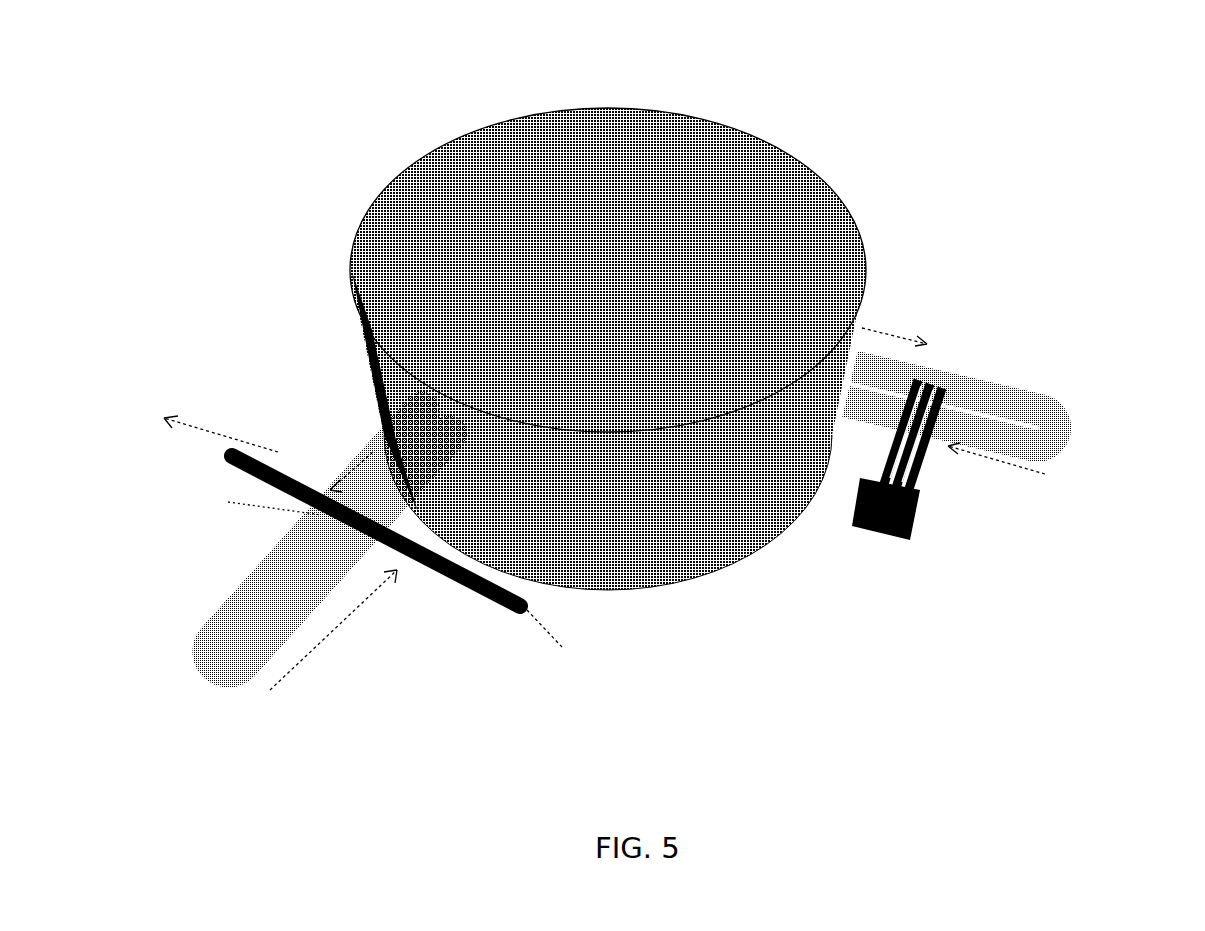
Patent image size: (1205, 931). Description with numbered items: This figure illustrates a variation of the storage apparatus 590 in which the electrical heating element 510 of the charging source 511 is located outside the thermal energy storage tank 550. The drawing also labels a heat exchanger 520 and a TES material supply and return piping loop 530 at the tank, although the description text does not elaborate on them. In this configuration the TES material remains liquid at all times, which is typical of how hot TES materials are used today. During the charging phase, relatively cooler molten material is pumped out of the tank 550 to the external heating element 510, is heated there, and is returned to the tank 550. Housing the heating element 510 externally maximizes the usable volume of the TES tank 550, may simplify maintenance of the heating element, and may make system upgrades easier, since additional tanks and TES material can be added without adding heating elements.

The thermal energy storage system 590 is at (634, 401).
The TES tank 550 is at (565, 369).
The heat exchanger 520 is at (215, 633).
The TES material supply and return piping 530 is at (1060, 415).
The electrical heating element 510 is at (950, 464).
The charging source 511 is at (891, 546).